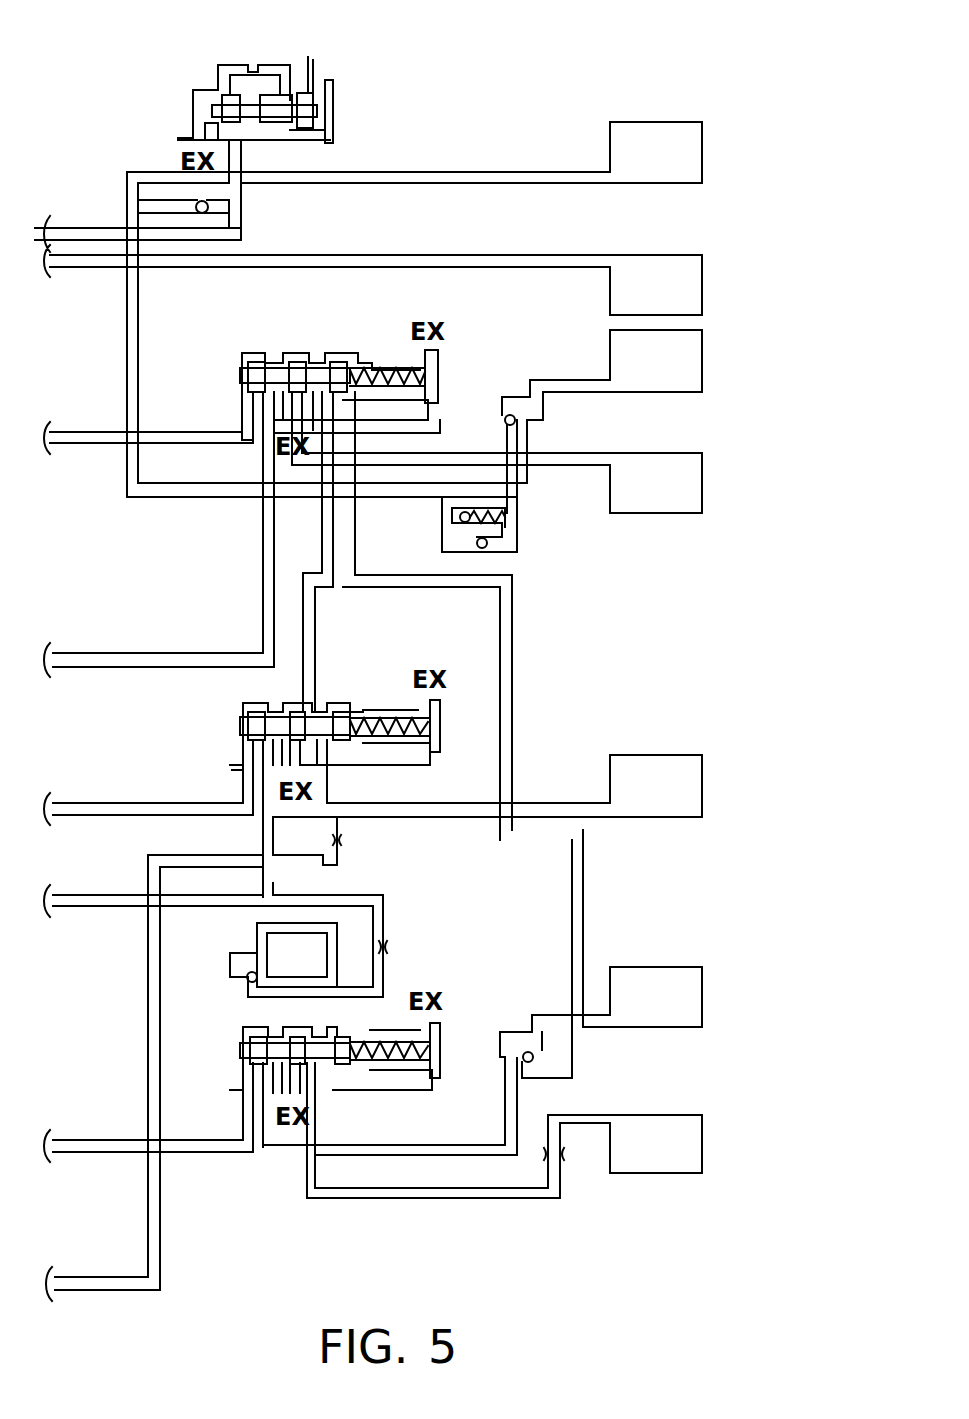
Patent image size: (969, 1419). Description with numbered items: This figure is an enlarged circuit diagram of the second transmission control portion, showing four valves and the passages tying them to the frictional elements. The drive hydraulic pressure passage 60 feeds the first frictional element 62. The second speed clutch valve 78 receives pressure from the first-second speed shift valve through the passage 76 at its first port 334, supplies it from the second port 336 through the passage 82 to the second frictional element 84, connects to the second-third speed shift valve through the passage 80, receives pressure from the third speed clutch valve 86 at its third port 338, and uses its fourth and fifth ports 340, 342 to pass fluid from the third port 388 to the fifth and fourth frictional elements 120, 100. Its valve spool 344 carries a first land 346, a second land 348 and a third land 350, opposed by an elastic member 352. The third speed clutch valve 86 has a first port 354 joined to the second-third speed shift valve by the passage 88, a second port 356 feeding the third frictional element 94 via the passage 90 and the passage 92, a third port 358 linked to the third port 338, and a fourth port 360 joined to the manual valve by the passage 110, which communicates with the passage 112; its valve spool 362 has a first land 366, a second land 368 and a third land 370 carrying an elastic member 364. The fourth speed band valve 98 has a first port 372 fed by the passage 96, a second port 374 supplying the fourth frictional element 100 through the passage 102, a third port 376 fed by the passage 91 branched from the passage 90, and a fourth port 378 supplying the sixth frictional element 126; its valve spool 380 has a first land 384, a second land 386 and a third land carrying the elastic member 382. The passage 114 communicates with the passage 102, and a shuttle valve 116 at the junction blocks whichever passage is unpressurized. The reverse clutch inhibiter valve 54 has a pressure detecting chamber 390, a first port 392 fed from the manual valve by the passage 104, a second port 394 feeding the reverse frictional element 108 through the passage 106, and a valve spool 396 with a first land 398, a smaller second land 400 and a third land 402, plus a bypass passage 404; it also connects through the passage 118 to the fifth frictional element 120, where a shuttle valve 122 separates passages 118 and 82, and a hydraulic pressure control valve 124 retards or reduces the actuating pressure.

The reverse clutch inhibiter valve 54 is at (262, 91).
The drive hydraulic pressure passage 60 is at (455, 254).
The first frictional element 62 is at (705, 285).
The passage 76 is at (80, 443).
The second speed clutch valve 78 is at (285, 390).
The passage 80 is at (80, 660).
The passage 82 is at (550, 465).
The second frictional element 84 is at (705, 482).
The third speed clutch valve 86 is at (314, 735).
The passage 88 is at (80, 810).
The passage 90 is at (80, 902).
The passage 91 is at (383, 925).
The passage 92 is at (560, 802).
The third frictional element 94 is at (705, 783).
The passage 96 is at (80, 1147).
The fourth speed band valve 98 is at (339, 1078).
The fourth frictional element 100 is at (705, 991).
The passage 102 is at (485, 1160).
The passage 104 is at (75, 227).
The passage 106 is at (509, 174).
The reverse frictional element 108 is at (703, 153).
The passage 110 is at (150, 1050).
The passage 112 is at (310, 607).
The passage 114 is at (512, 660).
The shuttle valve 116 is at (553, 1047).
The passage 118 is at (128, 360).
The fifth frictional element 120 is at (705, 358).
The shuttle valve 122 is at (532, 435).
The hydraulic pressure control valve 124 is at (532, 538).
The sixth frictional element 126 is at (705, 1138).
The first port 334 is at (237, 400).
The second port 336 is at (245, 400).
The third port 338 is at (333, 405).
The fourth port 340 is at (288, 445).
The fifth port 342 is at (400, 415).
The valve spool 344 is at (243, 373).
The first land 346 is at (255, 362).
The second land 348 is at (297, 362).
The third land 350 is at (338, 362).
The elastic member 352 is at (375, 368).
The first port 354 is at (243, 750).
The second port 356 is at (260, 775).
The third port 358 is at (312, 705).
The fourth port 360 is at (333, 765).
The valve spool 362 is at (240, 724).
The elastic member 364 is at (394, 715).
The first land 366 is at (255, 712).
The second land 368 is at (296, 713).
The third land 370 is at (343, 712).
The first port 372 is at (243, 1085).
The second port 374 is at (271, 1110).
The third port 376 is at (358, 1013).
The fourth port 378 is at (315, 1103).
The valve spool 380 is at (438, 1046).
The elastic member 382 is at (410, 1063).
The valve land 384 is at (252, 1050).
The second land 386 is at (298, 1003).
The third port 388 is at (340, 1063).
The pressure detecting chamber 390 is at (332, 116).
The first port 392 is at (268, 135).
The second port 394 is at (210, 140).
The valve spool 396 is at (218, 108).
The first land 398 is at (314, 85).
The second land 400 is at (275, 97).
The third land 402 is at (222, 100).
The bypass passage 404 is at (260, 66).